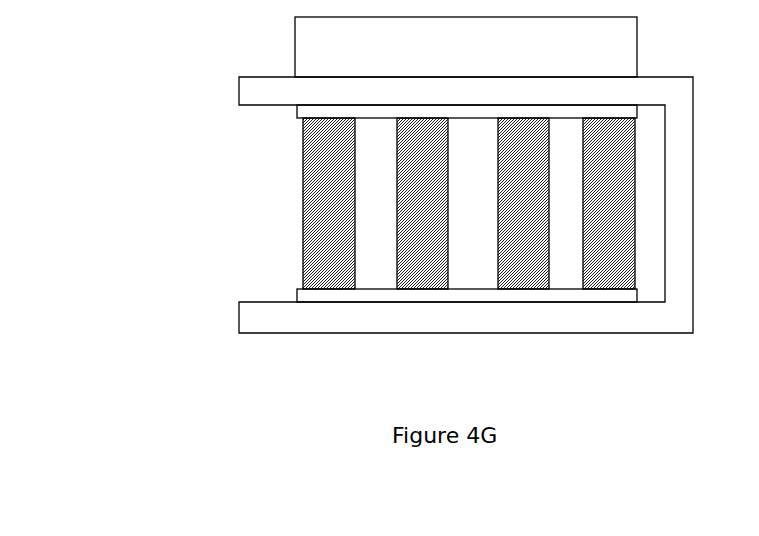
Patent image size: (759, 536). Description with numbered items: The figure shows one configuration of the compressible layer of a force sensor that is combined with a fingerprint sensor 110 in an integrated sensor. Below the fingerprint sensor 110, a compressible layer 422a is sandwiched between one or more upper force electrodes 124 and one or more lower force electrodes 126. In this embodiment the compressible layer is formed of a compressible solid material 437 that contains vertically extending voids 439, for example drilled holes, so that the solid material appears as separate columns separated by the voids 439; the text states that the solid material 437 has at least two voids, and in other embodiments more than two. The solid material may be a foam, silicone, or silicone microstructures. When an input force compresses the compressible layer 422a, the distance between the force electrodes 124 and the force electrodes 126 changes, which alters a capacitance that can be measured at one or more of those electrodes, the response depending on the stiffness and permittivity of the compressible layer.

The fingerprint sensor 110 is at (493, 60).
The force electrode 124 is at (297, 118).
The force electrode 126 is at (297, 290).
The compressible layer 422a is at (258, 200).
The compressible solid material 437 is at (425, 266).
The vertically extending voids 439 is at (482, 266).